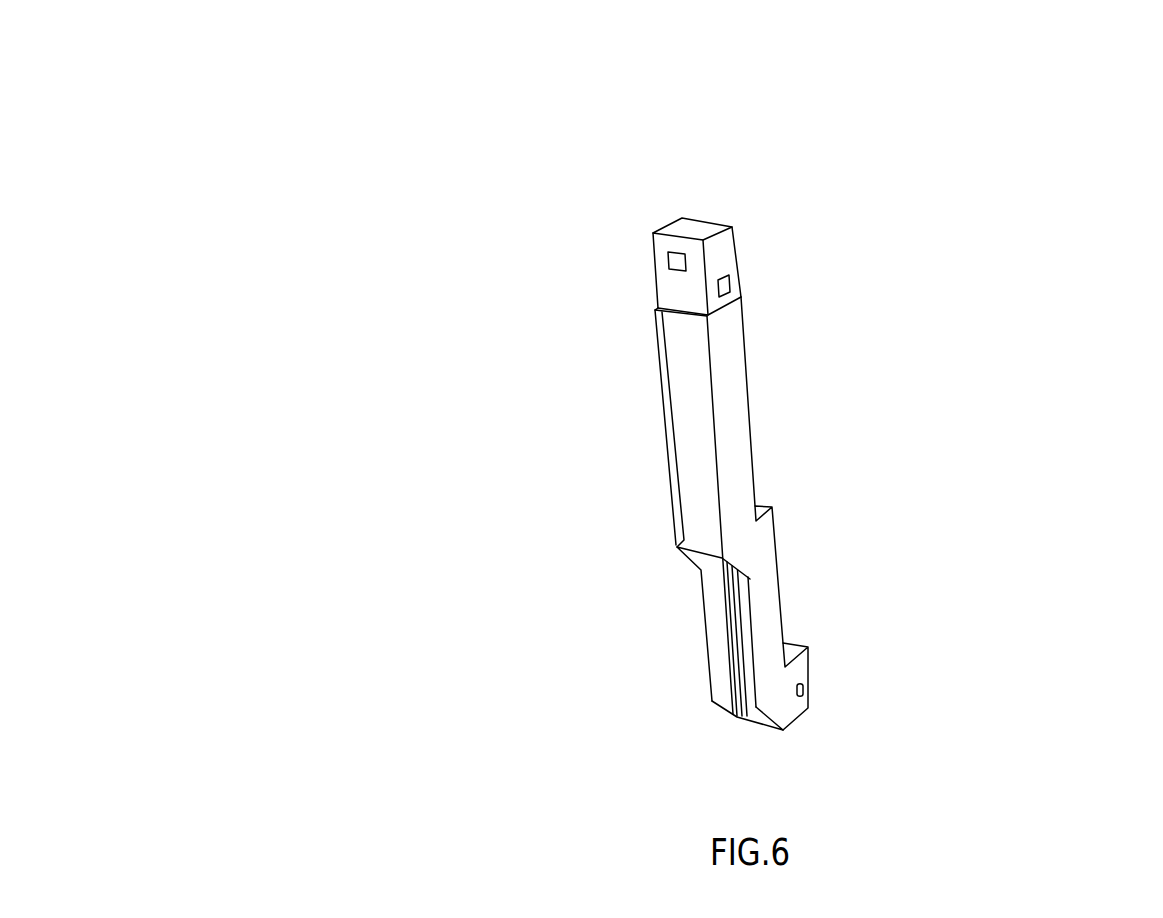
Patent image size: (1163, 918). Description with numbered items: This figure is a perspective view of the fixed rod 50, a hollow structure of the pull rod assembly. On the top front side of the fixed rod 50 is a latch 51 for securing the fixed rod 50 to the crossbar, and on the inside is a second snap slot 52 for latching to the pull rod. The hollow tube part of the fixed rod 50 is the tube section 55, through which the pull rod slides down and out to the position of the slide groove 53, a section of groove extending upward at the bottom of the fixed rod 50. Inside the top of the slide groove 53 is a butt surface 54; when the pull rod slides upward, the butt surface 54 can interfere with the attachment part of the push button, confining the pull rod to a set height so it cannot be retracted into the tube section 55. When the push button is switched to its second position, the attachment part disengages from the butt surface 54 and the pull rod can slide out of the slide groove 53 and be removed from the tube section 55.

The fixed rod 50 is at (668, 389).
The latch 51 is at (677, 262).
The second snap slot 52 is at (725, 283).
The slide groove 53 is at (768, 600).
The butt surface 54 is at (762, 503).
The tube section 55 is at (700, 482).